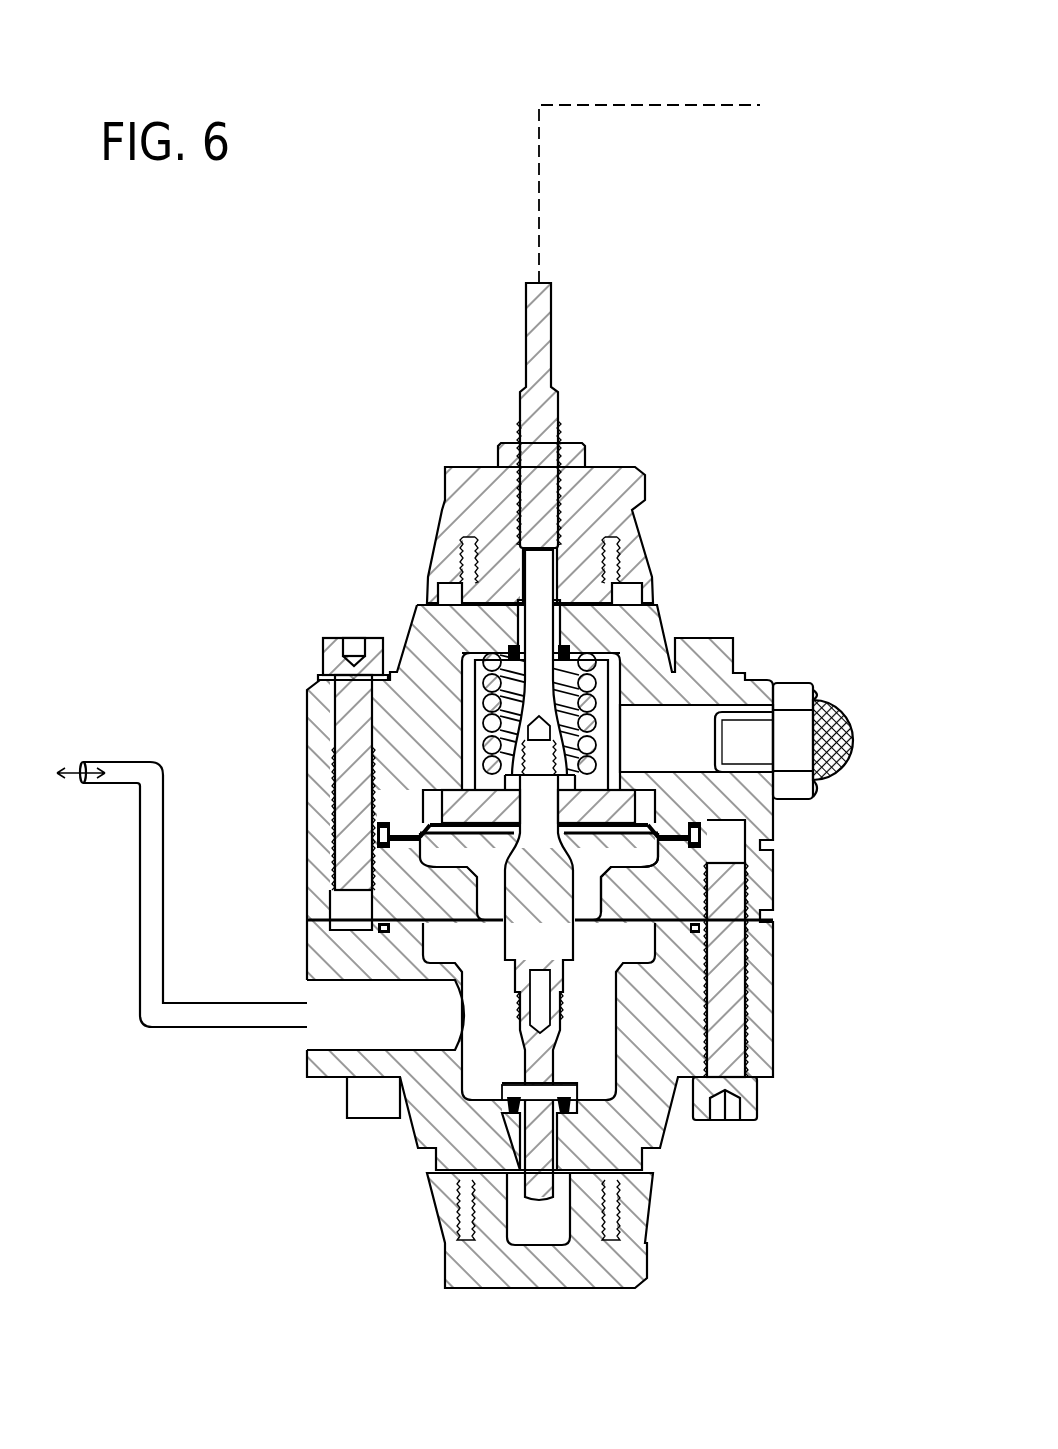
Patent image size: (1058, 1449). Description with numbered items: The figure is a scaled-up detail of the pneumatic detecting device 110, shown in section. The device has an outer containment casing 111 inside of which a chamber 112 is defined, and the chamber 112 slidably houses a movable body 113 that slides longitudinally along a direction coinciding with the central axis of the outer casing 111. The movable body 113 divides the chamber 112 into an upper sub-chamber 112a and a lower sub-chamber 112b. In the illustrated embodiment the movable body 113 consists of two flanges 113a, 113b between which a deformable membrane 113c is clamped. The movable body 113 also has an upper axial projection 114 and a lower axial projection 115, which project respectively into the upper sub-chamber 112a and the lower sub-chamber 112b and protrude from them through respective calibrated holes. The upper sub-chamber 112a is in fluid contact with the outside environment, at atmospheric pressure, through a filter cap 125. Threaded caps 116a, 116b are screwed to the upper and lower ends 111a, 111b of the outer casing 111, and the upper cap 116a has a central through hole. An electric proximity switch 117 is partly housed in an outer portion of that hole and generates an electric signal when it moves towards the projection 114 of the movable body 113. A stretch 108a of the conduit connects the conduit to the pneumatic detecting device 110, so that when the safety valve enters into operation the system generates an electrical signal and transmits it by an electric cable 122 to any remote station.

The stretch of the conduit 108a is at (138, 917).
The pneumatic detecting device 110 is at (387, 472).
The outer containment casing 111 is at (667, 623).
The upper end of the outer casing 111a is at (428, 542).
The lower end of the outer casing 111b is at (425, 1212).
The chamber 112 is at (640, 850).
The upper sub-chamber 112a is at (480, 707).
The lower sub-chamber 112b is at (580, 885).
The movable body 113 is at (535, 880).
The upper flange 113a is at (478, 810).
The lower flange 113b is at (510, 845).
The deformable membrane 113c is at (653, 813).
The upper axial projection 114 is at (550, 642).
The lower axial projection 115 is at (528, 1108).
The upper cap 116a is at (502, 500).
The lower cap 116b is at (572, 1272).
The electric proximity switch 117 is at (535, 430).
The electric cable 122 is at (612, 105).
The filter cap 125 is at (838, 707).